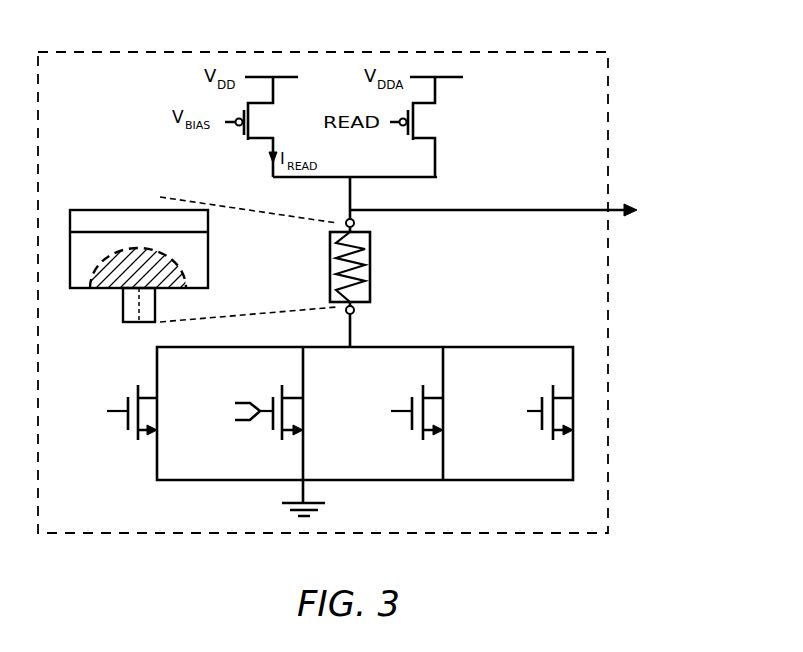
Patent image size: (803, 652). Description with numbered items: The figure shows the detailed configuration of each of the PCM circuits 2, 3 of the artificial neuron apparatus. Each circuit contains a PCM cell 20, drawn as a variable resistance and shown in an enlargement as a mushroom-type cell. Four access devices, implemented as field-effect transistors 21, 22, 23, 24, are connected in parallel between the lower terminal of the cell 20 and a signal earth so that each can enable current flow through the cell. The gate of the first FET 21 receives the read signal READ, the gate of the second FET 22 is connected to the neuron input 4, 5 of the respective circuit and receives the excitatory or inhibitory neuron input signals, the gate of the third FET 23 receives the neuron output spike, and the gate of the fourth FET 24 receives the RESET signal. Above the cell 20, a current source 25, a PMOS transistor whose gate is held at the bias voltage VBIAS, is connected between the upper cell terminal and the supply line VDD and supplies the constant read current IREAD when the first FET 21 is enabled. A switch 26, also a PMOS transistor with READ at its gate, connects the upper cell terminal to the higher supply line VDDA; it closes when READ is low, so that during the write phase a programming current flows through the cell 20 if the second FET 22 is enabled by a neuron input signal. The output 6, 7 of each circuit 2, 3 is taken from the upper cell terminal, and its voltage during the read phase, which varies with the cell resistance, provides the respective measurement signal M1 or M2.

The first PCM circuit 2 is at (323, 273).
The second PCM circuit 3 is at (507, 52).
The neuron input 4 is at (222, 430).
The neuron input 5 is at (240, 421).
The output 6 is at (522, 197).
The output 7 is at (530, 210).
The PCM cell 20 is at (372, 252).
The first FET 21 is at (118, 383).
The second FET 22 is at (265, 383).
The third FET 23 is at (405, 383).
The fourth FET 24 is at (535, 383).
The current source 25 is at (240, 139).
The switch 26 is at (404, 139).